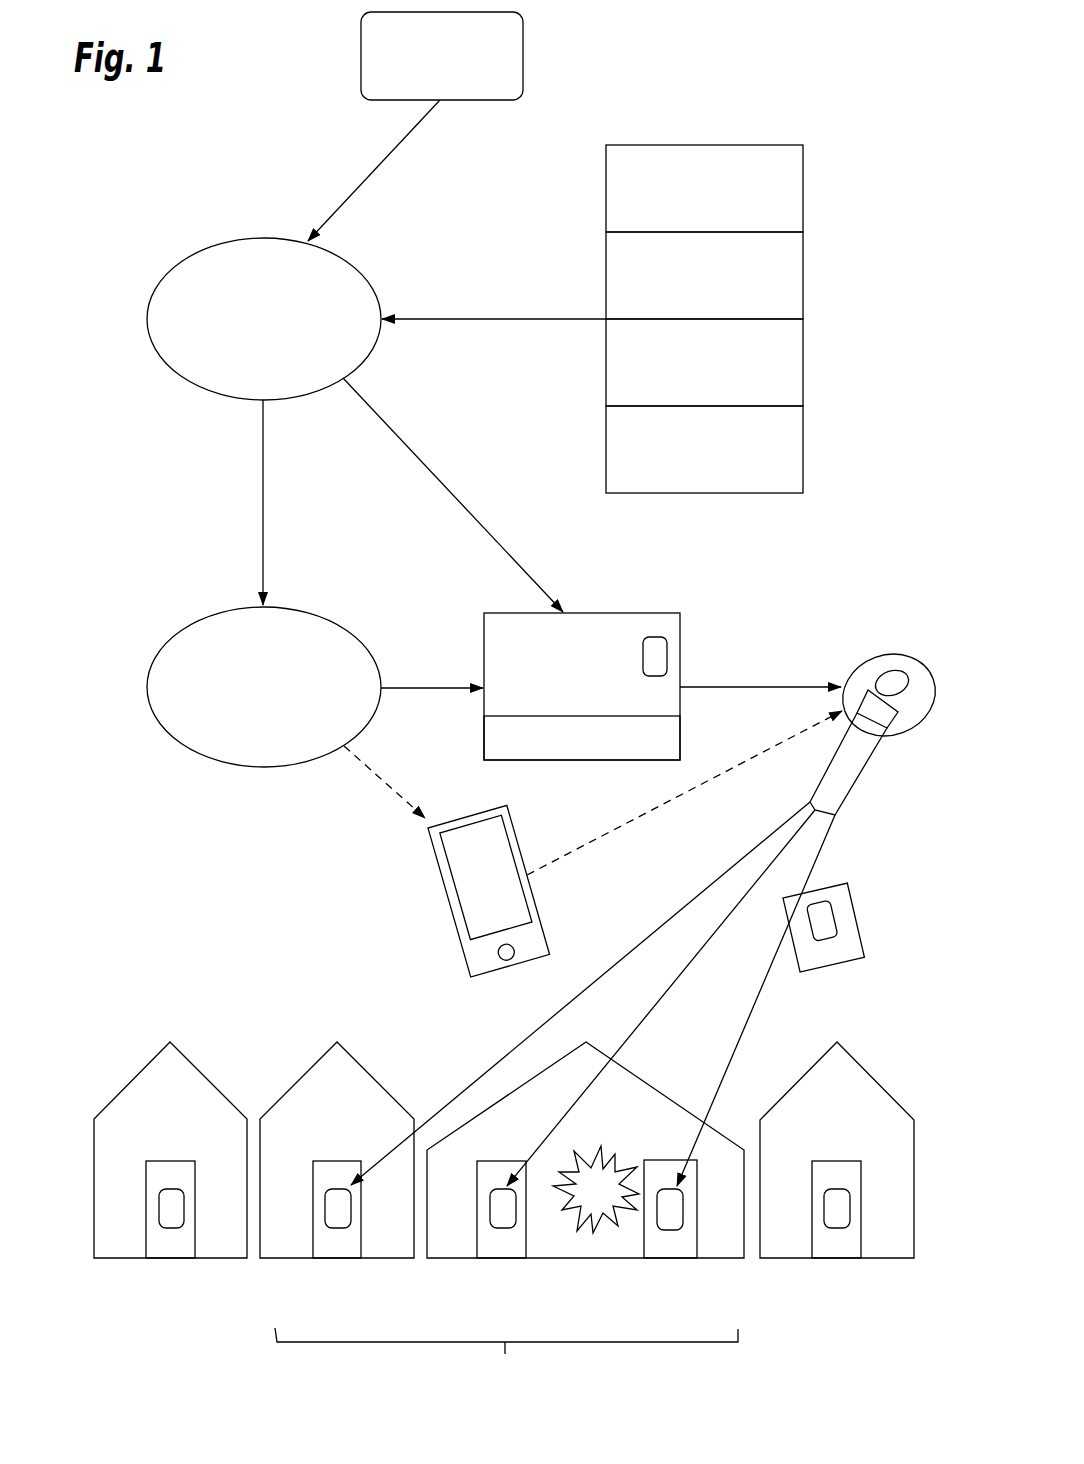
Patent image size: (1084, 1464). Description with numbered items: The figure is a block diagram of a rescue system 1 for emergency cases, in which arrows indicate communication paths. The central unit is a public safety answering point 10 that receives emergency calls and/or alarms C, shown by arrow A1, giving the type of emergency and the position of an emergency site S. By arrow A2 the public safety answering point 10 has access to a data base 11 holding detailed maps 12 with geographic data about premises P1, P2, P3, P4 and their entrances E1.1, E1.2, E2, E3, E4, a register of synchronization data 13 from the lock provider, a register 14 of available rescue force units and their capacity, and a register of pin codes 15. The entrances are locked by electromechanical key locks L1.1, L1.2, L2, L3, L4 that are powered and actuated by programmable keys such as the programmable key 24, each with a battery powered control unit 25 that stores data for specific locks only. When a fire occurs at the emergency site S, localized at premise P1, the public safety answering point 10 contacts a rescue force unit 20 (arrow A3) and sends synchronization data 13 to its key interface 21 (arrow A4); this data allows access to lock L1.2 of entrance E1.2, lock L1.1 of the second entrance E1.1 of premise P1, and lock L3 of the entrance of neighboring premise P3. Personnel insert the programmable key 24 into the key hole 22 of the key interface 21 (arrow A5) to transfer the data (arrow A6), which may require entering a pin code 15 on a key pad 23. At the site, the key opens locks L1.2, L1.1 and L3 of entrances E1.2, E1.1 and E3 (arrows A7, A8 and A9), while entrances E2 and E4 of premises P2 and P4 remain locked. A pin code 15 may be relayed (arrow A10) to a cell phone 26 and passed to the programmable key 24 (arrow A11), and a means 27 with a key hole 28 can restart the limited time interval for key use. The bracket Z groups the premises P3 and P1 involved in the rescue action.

The rescue system 1 is at (113, 257).
The emergency calls and/or alarms C is at (526, 58).
The public safety answering point 10 is at (363, 274).
The data base 11 is at (746, 289).
The maps 12 is at (803, 207).
The synchronization data 13 is at (803, 293).
The rescue force unit data 14 is at (803, 377).
The pin codes 15 is at (803, 463).
The rescue force unit 20 is at (347, 626).
The key interface 21 is at (624, 663).
The key hole 22 is at (667, 656).
The key pad 23 is at (670, 735).
The programmable key 24 is at (878, 697).
The control unit 25 is at (892, 723).
The cell phone 26 is at (535, 908).
The means to restart the limited time interval 27 is at (852, 905).
The key hole 28 is at (840, 925).
The arrow A1 is at (380, 163).
The arrow A2 is at (497, 319).
The arrow A3 is at (263, 509).
The arrow A4 is at (450, 493).
The arrow A5 is at (419, 688).
The arrow A6 is at (783, 687).
The arrow A7 is at (673, 983).
The arrow A8 is at (741, 1037).
The arrow A9 is at (645, 940).
The arrow A10 is at (386, 788).
The arrow A11 is at (647, 811).
The premise P1 is at (591, 1170).
The premise P2 is at (847, 1170).
The premise P3 is at (347, 1169).
The premise P4 is at (181, 1169).
The electromechanical key lock L1.1 is at (676, 1189).
The electromechanical key lock L1.2 is at (503, 1189).
The electromechanical key lock L2 is at (837, 1189).
The electromechanical key lock L3 is at (339, 1189).
The electromechanical key lock L4 is at (170, 1189).
The entrance E1.1 is at (680, 1258).
The entrance E1.2 is at (509, 1258).
The entrance E2 is at (847, 1258).
The entrance E3 is at (346, 1258).
The entrance E4 is at (181, 1258).
The emergency site S is at (612, 1219).
The zone Z is at (506, 1357).